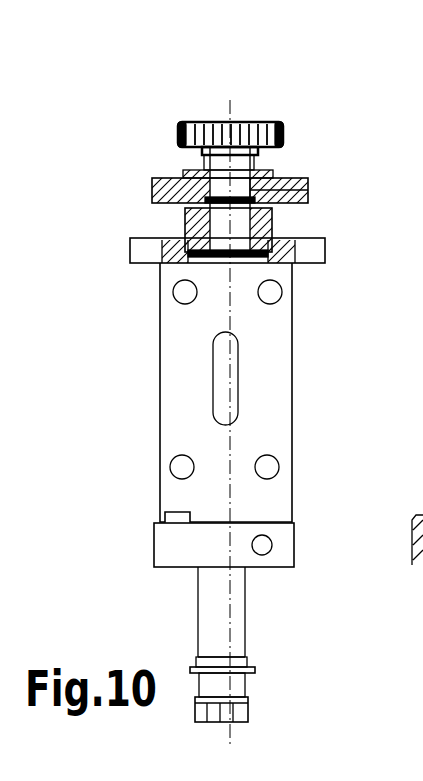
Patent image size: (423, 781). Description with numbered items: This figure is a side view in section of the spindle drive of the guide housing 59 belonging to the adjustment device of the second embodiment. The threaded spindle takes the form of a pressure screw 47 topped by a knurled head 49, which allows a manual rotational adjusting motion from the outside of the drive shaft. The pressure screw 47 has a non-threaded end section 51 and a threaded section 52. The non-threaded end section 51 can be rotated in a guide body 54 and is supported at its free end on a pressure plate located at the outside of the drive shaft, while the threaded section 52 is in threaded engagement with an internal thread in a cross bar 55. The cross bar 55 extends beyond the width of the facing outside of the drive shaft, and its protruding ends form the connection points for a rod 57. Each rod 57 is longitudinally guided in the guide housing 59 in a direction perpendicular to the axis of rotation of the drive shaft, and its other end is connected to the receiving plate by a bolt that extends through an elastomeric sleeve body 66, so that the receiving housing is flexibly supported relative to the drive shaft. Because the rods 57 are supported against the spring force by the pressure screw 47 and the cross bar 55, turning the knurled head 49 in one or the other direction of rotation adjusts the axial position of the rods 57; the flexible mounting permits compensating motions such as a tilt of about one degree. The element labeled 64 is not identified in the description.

The pressure screw 47 is at (277, 177).
The knurled head 49 is at (248, 121).
The non-threaded end section 51 is at (222, 230).
The threaded section 52 is at (203, 165).
The guide body 54 is at (270, 220).
The cross bar 55 is at (292, 195).
The rod 57 is at (247, 613).
The guide housing 59 is at (188, 402).
The bottom nut 64 is at (222, 722).
The elastomeric sleeve body 66 is at (242, 686).